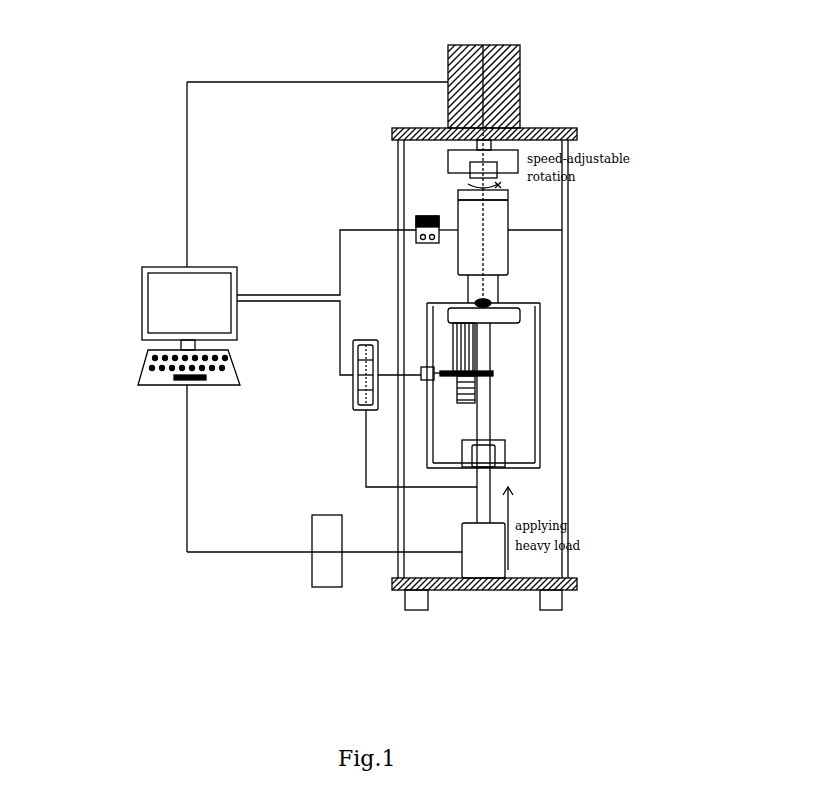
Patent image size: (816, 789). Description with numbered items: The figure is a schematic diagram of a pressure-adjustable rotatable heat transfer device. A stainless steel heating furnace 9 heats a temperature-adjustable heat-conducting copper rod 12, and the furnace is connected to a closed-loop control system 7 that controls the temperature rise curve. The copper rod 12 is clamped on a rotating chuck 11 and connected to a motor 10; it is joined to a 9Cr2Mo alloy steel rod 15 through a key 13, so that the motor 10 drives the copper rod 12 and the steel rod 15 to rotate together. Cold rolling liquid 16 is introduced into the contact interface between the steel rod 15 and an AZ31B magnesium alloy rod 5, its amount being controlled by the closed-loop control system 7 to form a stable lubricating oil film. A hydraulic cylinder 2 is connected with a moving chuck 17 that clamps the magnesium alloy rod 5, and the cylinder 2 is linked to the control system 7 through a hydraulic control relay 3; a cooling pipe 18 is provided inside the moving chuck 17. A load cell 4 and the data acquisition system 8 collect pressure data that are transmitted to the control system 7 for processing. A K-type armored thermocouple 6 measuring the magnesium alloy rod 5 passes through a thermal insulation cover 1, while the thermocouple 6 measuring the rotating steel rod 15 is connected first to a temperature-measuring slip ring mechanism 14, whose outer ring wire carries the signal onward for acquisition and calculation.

The thermal insulation cover 1 is at (504, 393).
The hydraulic cylinder 2 is at (507, 591).
The control relay 3 is at (353, 588).
The RNT-33T load cell 4 is at (264, 572).
The AZ31B magnesium alloy rod 5 is at (271, 467).
The K-type armored thermocouple 6 is at (263, 469).
The closed-loop control system 7 is at (146, 381).
The data acquisition system 8 is at (213, 279).
The stainless steel heating furnace 9 is at (279, 182).
The motor 10 is at (283, 64).
The rotating chuck 11 is at (588, 109).
The temperature-adjustable heat-conducting copper rod 12 is at (598, 201).
The key 13 is at (602, 225).
The temperature-measuring slip ring mechanism 14 is at (588, 249).
The 9Cr2Mo alloy steel rod 15 is at (591, 291).
The cold rolling liquid 16 is at (584, 332).
The moving chuck 17 is at (595, 384).
The cooling pipe 18 is at (600, 404).